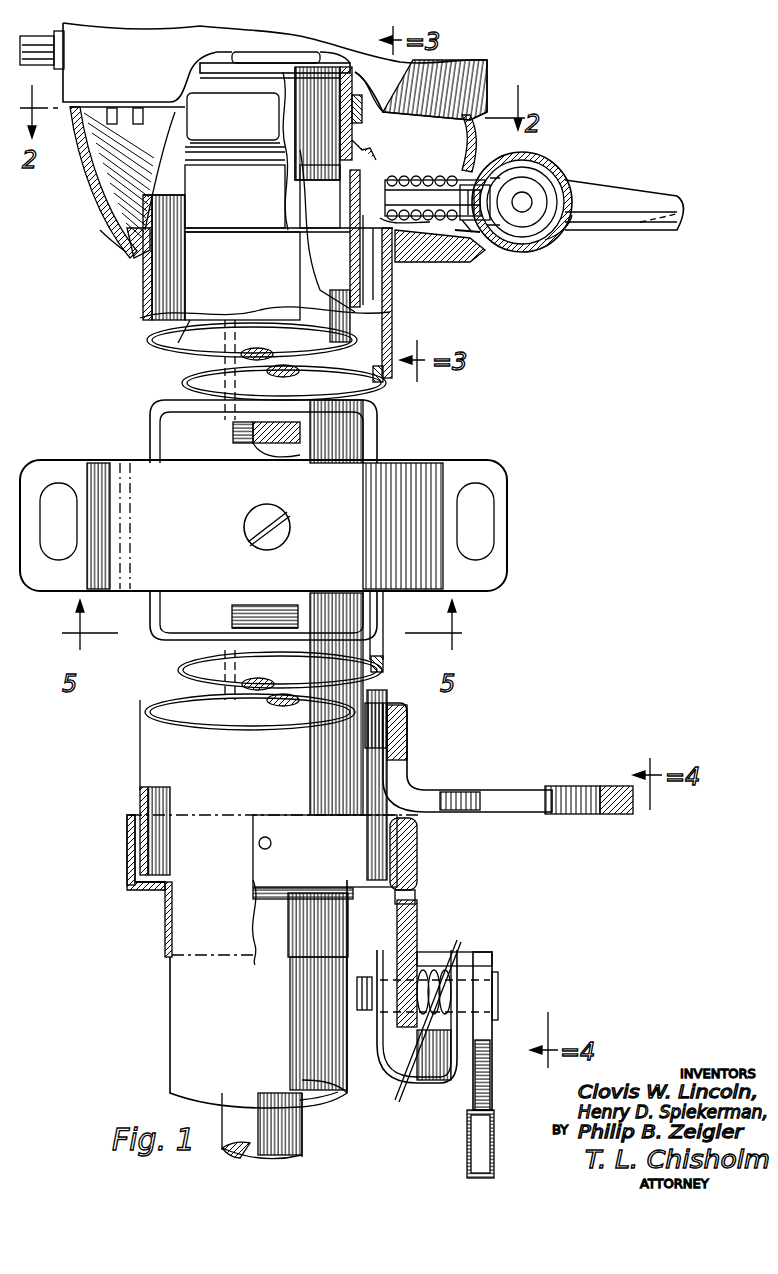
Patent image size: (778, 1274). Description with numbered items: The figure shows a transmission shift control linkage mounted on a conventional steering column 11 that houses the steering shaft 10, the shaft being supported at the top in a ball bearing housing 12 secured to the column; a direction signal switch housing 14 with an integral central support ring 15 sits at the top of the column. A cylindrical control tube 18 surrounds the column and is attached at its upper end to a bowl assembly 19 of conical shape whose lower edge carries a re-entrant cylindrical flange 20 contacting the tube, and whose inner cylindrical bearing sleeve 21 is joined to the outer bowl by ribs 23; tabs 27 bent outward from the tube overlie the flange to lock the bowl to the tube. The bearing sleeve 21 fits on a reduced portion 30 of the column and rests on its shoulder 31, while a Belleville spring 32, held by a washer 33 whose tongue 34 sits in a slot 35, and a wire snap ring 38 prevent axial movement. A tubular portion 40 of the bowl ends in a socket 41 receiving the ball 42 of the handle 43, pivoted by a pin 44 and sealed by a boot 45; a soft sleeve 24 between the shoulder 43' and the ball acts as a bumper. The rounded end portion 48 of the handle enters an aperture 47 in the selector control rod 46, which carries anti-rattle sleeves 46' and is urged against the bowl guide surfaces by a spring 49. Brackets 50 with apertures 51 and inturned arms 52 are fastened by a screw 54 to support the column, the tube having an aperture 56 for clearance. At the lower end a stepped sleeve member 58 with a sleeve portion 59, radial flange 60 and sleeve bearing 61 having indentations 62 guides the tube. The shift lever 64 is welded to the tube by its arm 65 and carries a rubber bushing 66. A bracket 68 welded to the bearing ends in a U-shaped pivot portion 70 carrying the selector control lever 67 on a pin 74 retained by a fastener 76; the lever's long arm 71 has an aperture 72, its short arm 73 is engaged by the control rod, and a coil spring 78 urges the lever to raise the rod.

The steering shaft 10 is at (255, 365).
The steering column 11 is at (178, 350).
The ball bearing housing 12 is at (348, 88).
The direction signal switch housing 14 is at (175, 40).
The central support ring 15 is at (380, 100).
The control tube 18 is at (147, 350).
The bowl assembly 19 is at (88, 178).
The re-entrant cylindrical flange 20 is at (130, 252).
The cylindrical bearing sleeve 21 is at (233, 232).
The ribs 23 is at (462, 130).
The sleeve 24 is at (470, 245).
The tabs 27 is at (108, 232).
The reduced portion 30 is at (330, 205).
The shoulder 31 is at (350, 245).
The Belleville spring 32 is at (228, 165).
The washer 33 is at (375, 158).
The tongue 34 is at (317, 123).
The slot 35 is at (360, 126).
The wire snap ring 38 is at (186, 152).
The tubular portion 40 is at (448, 262).
The socket 41 is at (518, 255).
The ball 42 is at (545, 165).
The handle 43 is at (624, 195).
The shoulder 43' is at (456, 246).
The pin 44 is at (512, 200).
The boot 45 is at (550, 250).
The selector control rod 46 is at (416, 569).
The sleeves 46' is at (401, 519).
The aperture 47 is at (435, 195).
The rounded end portion 48 is at (405, 228).
The spring 49 is at (432, 170).
The brackets 50 is at (462, 463).
The apertures 51 is at (494, 505).
The arm 52 is at (233, 430).
The screw 54 is at (278, 536).
The aperture 56 is at (150, 435).
The stepped sleeve member 58 is at (130, 890).
The lower cylindrical sleeve portion 59 is at (170, 935).
The radial flange 60 is at (165, 900).
The sleeve bearing 61 is at (127, 855).
The indentations 62 is at (127, 830).
The shift lever 64 is at (490, 790).
The laterally bent arm 65 is at (408, 728).
The rubber bushing 66 is at (592, 786).
The selector control lever 67 is at (485, 952).
The bracket 68 is at (417, 884).
The U-shaped pivot portion 70 is at (385, 1085).
The long arm 71 is at (490, 1046).
The aperture 72 is at (467, 1145).
The short arm 73 is at (412, 942).
The pin 74 is at (498, 992).
The fastener 76 is at (364, 1012).
The coil spring 78 is at (435, 1016).